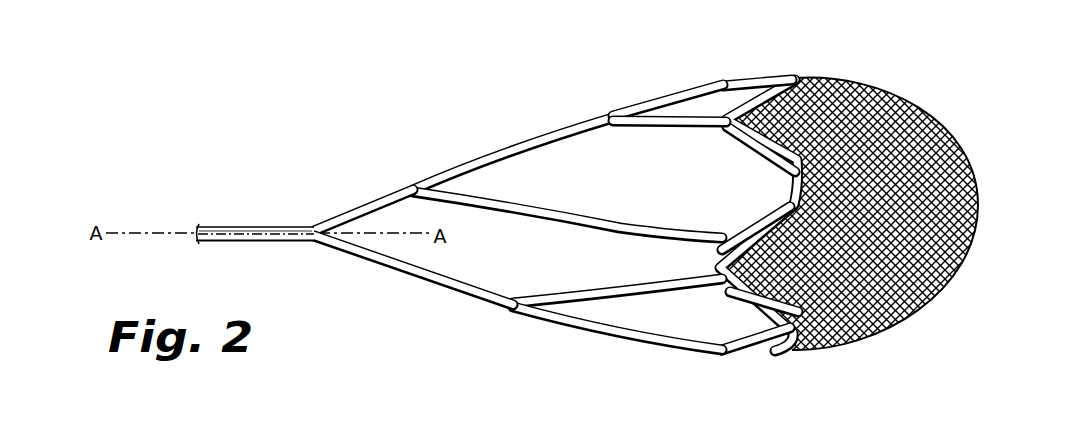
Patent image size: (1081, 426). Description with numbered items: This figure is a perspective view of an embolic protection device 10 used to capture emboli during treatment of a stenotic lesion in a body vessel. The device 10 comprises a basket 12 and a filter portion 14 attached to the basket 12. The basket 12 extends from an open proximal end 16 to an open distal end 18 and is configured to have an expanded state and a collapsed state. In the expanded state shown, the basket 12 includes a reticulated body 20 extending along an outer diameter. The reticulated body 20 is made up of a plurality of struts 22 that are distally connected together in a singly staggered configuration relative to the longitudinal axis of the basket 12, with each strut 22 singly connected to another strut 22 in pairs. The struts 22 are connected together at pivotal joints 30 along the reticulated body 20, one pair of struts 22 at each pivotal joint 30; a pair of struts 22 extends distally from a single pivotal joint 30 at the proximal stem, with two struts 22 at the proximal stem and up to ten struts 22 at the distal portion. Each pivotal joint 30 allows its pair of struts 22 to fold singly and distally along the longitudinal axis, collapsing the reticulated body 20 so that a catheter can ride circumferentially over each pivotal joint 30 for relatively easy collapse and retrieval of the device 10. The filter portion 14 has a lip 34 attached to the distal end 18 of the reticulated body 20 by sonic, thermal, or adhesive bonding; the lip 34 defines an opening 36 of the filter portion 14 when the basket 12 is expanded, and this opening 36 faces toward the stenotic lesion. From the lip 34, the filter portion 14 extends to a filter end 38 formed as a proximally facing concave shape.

The embolic protection device 10 is at (391, 88).
The basket 12 is at (419, 175).
The filter portion 14 is at (927, 108).
The open proximal end 16 is at (304, 226).
The open distal end 18 is at (793, 75).
The reticulated body 20 is at (493, 153).
The struts 22 is at (600, 220).
The pivotal joints 30 is at (310, 243).
The lip 34 is at (722, 303).
The opening 36 is at (753, 153).
The filter end 38 is at (980, 190).